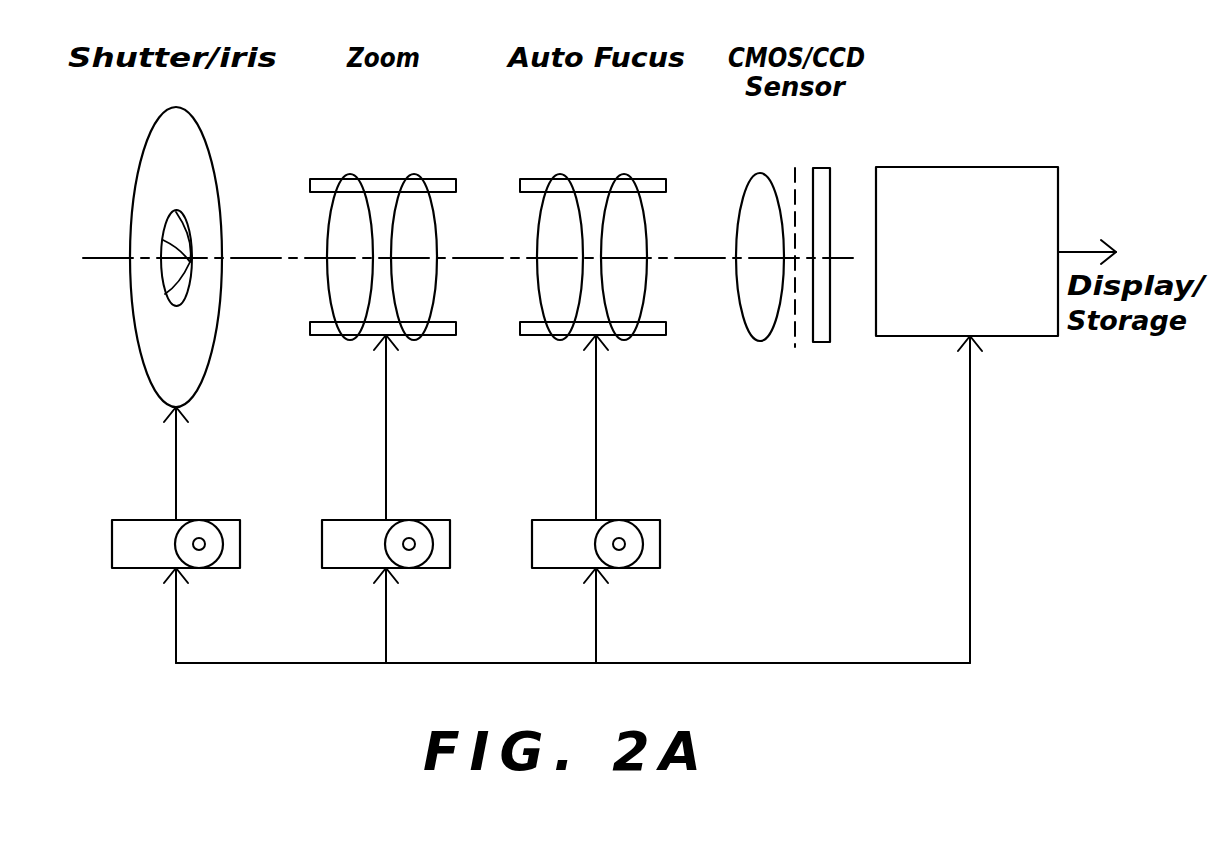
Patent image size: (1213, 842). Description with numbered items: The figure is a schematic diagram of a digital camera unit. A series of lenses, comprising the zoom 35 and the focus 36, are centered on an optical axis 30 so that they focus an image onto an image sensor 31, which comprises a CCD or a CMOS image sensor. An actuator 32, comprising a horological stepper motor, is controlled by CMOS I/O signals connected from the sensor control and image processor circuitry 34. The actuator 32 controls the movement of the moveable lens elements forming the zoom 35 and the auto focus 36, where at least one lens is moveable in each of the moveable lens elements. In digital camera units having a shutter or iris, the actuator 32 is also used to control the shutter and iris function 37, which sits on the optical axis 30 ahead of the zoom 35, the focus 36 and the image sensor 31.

The optical axis 30 is at (265, 257).
The image sensor 31 is at (816, 168).
The actuator 32 is at (212, 520).
The sensor control and image processor circuitry 34 is at (1047, 167).
The zoom 35 is at (383, 179).
The auto focus 36 is at (593, 179).
The shutter and iris function 37 is at (141, 157).